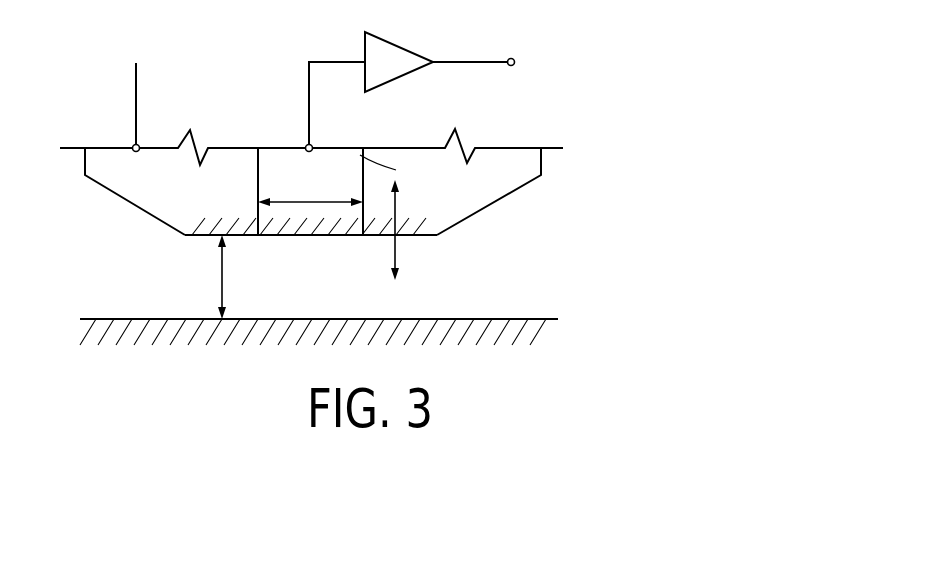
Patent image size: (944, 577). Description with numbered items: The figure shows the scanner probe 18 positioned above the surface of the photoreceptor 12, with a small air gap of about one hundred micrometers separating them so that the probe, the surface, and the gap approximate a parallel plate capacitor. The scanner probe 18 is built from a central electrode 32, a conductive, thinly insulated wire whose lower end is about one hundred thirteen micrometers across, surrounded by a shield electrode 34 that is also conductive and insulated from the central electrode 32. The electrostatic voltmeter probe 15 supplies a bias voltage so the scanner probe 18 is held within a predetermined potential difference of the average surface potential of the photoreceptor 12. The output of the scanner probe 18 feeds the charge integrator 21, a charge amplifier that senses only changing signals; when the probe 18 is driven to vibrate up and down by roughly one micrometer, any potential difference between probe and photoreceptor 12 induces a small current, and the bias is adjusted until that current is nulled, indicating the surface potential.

The photoreceptor 12 is at (483, 333).
The electrostatic voltmeter probe 15 is at (124, 45).
The scanner probe 18 is at (624, 79).
The charge integrator 21 is at (413, 50).
The central electrode 32 is at (335, 158).
The shield electrode 34 is at (142, 194).